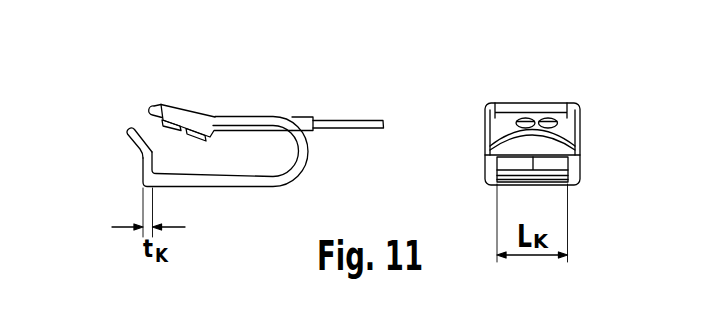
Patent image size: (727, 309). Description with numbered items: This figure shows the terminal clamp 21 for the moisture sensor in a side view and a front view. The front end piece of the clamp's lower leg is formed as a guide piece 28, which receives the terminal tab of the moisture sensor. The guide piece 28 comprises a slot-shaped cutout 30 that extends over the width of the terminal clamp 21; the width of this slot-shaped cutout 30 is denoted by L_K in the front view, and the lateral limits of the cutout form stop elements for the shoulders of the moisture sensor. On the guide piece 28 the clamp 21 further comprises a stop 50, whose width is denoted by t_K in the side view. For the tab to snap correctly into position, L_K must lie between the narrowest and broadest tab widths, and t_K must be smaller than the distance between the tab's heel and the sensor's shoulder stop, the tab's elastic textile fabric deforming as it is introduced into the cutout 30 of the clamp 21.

The terminal clamp 21 is at (250, 94).
The guide piece 28 is at (474, 138).
The slot-shaped cutout 30 is at (496, 164).
The stop 50 is at (148, 171).